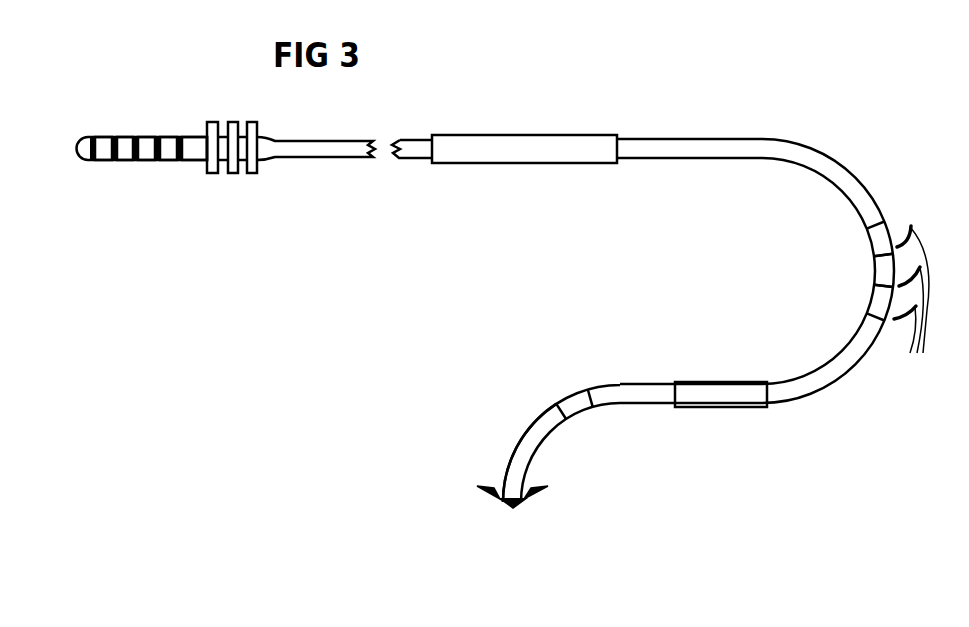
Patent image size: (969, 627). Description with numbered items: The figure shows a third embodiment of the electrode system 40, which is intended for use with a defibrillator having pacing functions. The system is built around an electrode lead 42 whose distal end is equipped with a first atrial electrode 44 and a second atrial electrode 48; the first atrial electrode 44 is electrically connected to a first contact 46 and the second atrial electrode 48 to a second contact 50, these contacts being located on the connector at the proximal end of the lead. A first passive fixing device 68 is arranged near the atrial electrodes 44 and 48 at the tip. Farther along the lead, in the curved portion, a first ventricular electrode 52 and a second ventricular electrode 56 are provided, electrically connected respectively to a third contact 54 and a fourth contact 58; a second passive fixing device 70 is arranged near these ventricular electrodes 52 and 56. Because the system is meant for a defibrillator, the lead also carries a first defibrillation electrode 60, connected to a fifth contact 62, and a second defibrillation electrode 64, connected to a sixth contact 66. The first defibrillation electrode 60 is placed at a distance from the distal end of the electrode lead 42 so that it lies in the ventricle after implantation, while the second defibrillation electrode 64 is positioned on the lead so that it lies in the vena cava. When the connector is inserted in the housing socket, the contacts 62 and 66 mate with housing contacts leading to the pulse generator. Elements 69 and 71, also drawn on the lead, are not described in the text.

The electrode system 40 is at (458, 114).
The electrode lead 42 is at (665, 150).
The first atrial electrode 44 is at (513, 510).
The first contact 46 is at (80, 137).
The second atrial electrode 48 is at (572, 400).
The second contact 50 is at (103, 160).
The first ventricular electrode 52 is at (880, 303).
The third contact 54 is at (127, 136).
The second ventricular electrode 56 is at (880, 235).
The fourth contact 58 is at (147, 160).
The first defibrillation electrode 60 is at (720, 407).
The fifth contact 62 is at (165, 136).
The second defibrillation electrode 64 is at (513, 163).
The sixth contact 66 is at (197, 160).
The first passive fixing device 68 is at (487, 495).
The ring electrode 69 is at (882, 268).
The second passive fixing device 70 is at (911, 308).
The curved distal section 71 is at (527, 433).